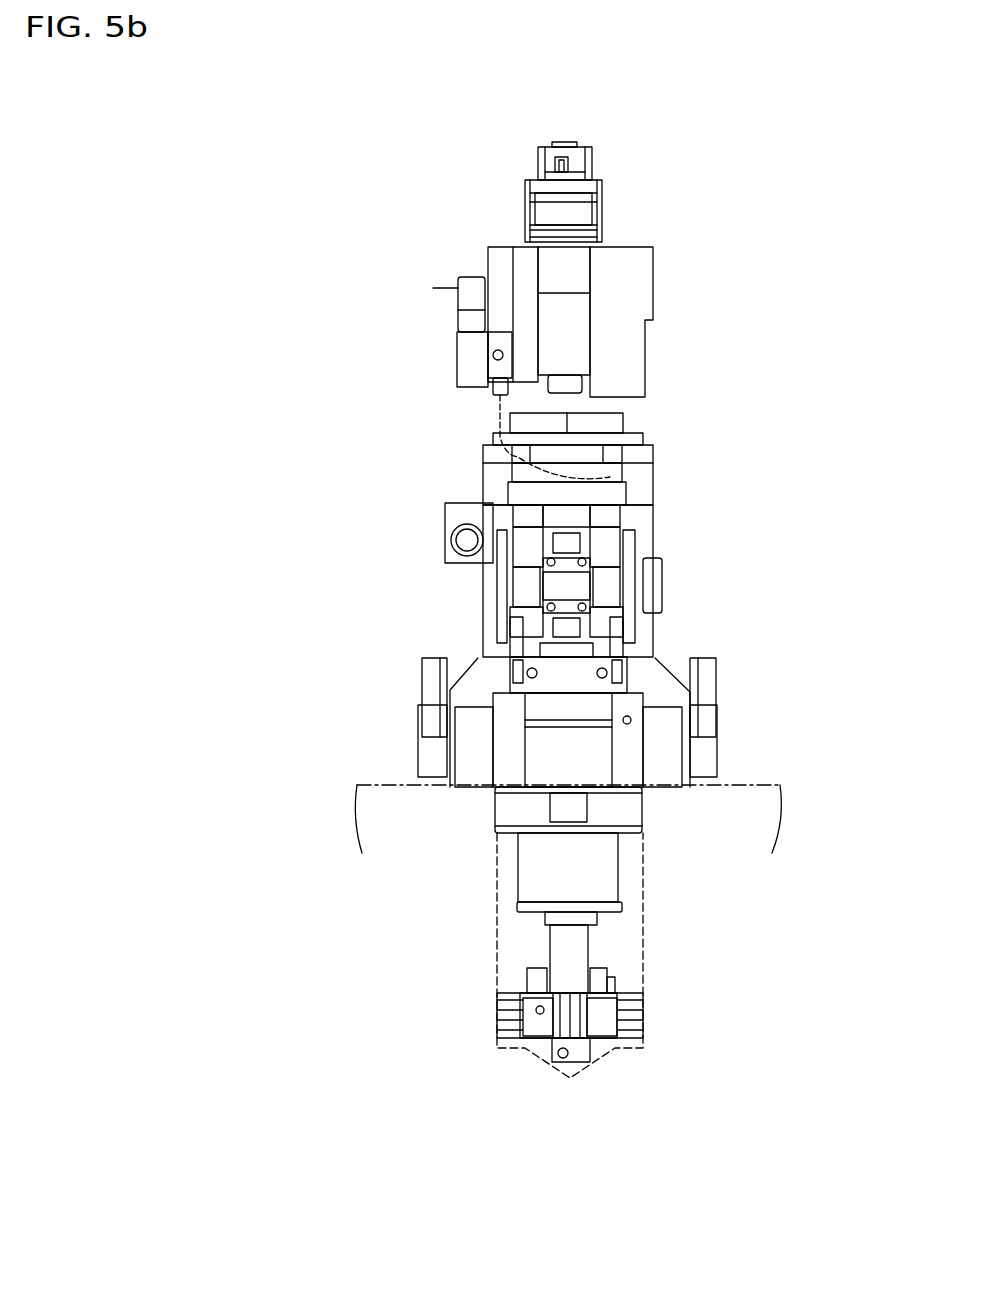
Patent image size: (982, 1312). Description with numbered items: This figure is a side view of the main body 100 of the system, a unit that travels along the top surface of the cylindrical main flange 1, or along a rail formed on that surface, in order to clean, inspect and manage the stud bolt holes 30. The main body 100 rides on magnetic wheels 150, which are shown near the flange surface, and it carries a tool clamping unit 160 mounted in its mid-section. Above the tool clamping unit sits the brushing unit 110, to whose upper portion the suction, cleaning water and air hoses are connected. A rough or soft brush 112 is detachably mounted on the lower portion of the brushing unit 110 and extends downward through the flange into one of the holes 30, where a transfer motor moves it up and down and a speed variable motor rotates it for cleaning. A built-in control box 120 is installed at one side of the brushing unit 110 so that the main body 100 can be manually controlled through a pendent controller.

The main body 100 is at (390, 146).
The brushing unit 110 is at (580, 214).
The built-in control box 120 is at (627, 305).
The tool clamping unit 160 is at (645, 535).
The magnetic wheels 150 is at (672, 730).
The cylindrical main flange 1 is at (397, 783).
The brush 112 is at (633, 1052).
The holes 30 is at (495, 958).